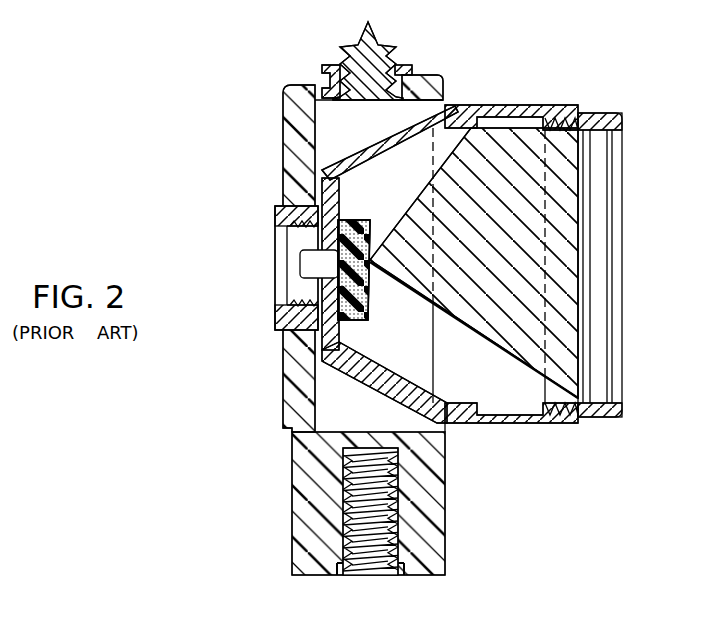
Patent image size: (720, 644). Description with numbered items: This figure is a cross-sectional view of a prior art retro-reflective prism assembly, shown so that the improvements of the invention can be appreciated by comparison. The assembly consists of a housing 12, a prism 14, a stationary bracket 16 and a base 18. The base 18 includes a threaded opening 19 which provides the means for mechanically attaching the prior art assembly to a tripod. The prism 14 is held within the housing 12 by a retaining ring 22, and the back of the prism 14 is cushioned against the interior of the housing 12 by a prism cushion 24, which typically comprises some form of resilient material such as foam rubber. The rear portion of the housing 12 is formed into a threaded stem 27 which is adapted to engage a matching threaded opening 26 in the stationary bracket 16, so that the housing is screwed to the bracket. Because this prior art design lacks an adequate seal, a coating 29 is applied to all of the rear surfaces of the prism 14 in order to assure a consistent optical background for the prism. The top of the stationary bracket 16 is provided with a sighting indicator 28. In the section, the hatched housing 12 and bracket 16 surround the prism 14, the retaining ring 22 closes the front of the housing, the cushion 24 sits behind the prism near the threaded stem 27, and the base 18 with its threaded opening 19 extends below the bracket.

The housing 12 is at (522, 104).
The prism 14 is at (580, 273).
The stationary bracket 16 is at (293, 102).
The base 18 is at (302, 523).
The threaded opening 19 is at (379, 576).
The retaining ring 22 is at (602, 114).
The prism cushion 24 is at (356, 322).
The threaded opening 26 is at (276, 231).
The threaded stem 27 is at (298, 266).
The sighting indicator 28 is at (358, 43).
The coating 29 is at (455, 327).